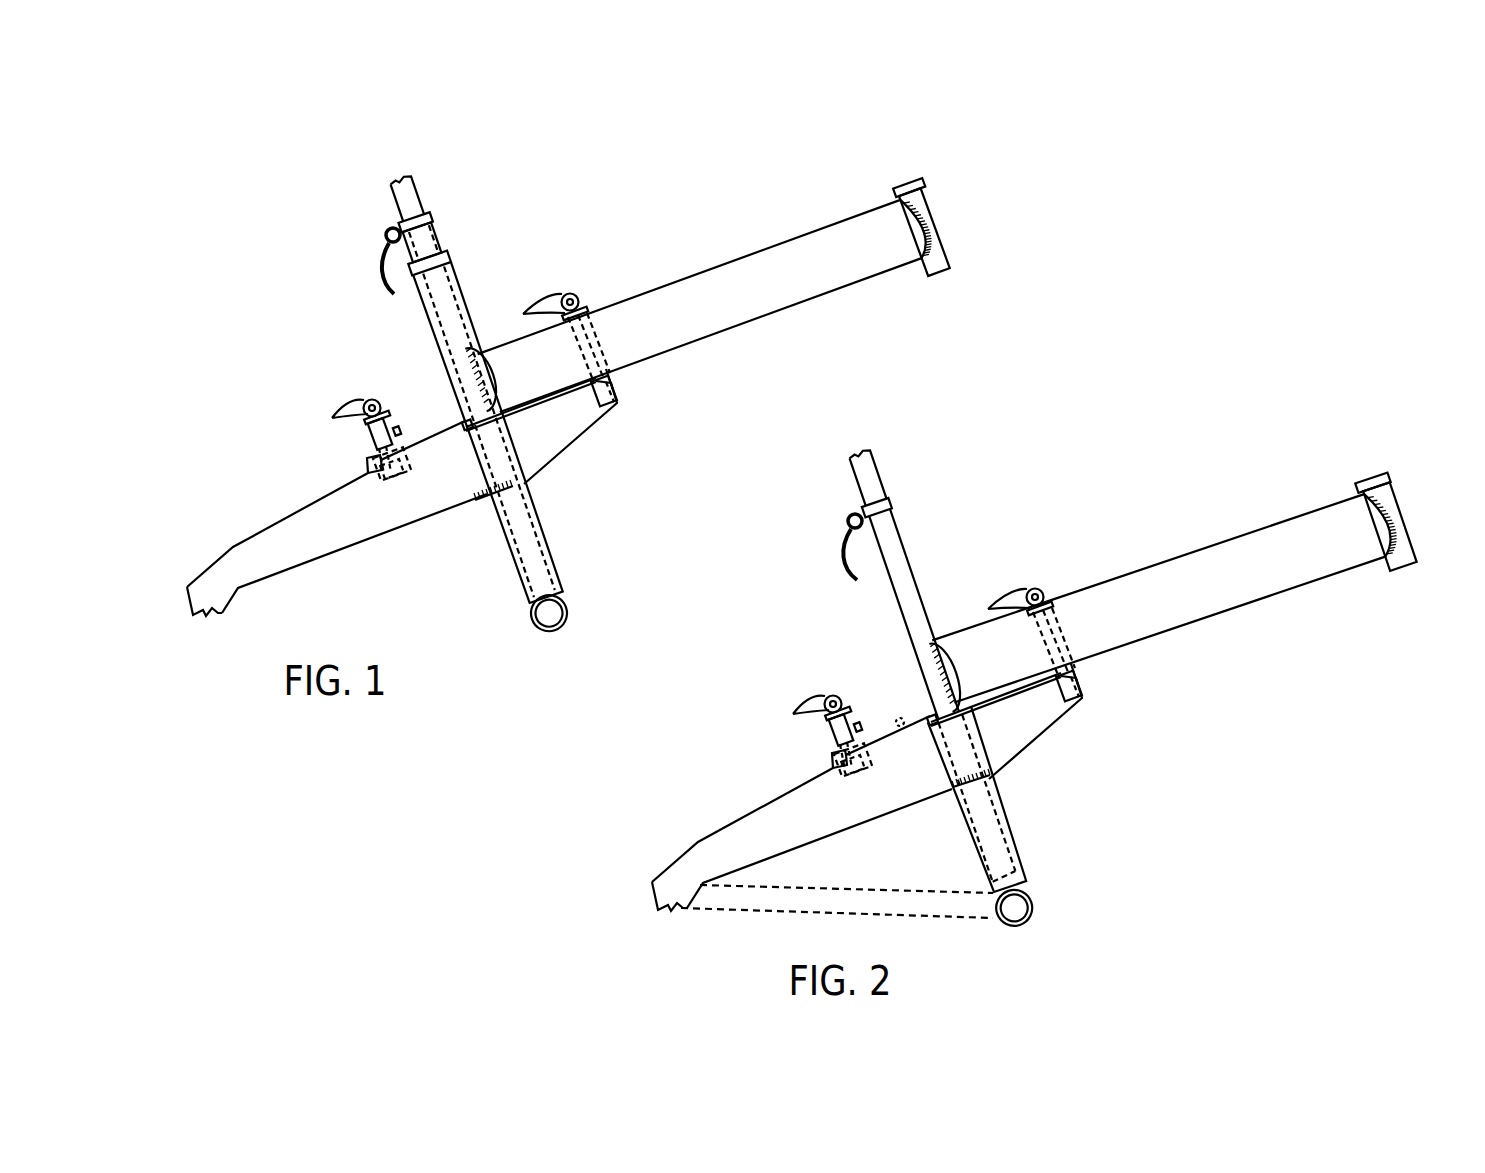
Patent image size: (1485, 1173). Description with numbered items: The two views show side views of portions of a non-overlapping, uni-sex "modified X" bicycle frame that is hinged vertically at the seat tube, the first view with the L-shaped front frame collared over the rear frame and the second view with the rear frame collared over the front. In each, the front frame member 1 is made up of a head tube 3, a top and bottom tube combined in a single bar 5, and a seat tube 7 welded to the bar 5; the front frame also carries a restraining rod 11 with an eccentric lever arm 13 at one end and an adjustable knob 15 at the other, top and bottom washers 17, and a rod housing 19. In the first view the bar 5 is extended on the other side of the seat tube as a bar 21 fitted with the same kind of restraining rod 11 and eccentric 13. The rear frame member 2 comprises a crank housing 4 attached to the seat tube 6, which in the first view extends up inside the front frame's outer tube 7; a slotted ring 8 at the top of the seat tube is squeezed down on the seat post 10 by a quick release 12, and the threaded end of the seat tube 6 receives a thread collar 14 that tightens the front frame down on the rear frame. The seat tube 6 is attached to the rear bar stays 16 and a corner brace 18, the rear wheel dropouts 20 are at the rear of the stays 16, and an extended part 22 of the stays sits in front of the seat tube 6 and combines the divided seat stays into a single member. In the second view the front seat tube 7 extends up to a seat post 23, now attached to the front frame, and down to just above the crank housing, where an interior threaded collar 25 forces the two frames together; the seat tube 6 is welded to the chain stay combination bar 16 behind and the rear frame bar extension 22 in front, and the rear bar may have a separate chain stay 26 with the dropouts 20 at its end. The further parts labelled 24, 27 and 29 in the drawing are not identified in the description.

In FIG. 1, the front frame member 1 is at (731, 295).
In FIG. 2, the front frame member 1 is at (1196, 588).
In FIG. 1, the rear frame member 2 is at (381, 524).
In FIG. 2, the rear frame member 2 is at (846, 812).
In FIG. 1, the head tube 3 is at (928, 218).
In FIG. 2, the head tube 3 is at (1406, 517).
In FIG. 1, the crank housing 4 is at (531, 611).
In FIG. 2, the crank housing 4 is at (1022, 909).
In FIG. 1, the bar 5 is at (674, 316).
In FIG. 2, the bar 5 is at (1145, 611).
In FIG. 1, the seat tube 6 is at (458, 273).
In FIG. 2, the seat tube 6 is at (965, 852).
In FIG. 1, the seat tube 7 is at (434, 343).
In FIG. 2, the seat tube 7 is at (898, 540).
In FIG. 1, the slotted ring 8 is at (408, 222).
In FIG. 1, the seat post 10 is at (413, 183).
In FIG. 1, the restraining rod 11 is at (369, 466).
In FIG. 2, the restraining rod 11 is at (842, 765).
In FIG. 1, the quick release 12 is at (380, 234).
In FIG. 1, the eccentric lever arm 13 is at (338, 415).
In FIG. 2, the eccentric lever arm 13 is at (798, 712).
In FIG. 1, the thread collar 14 is at (447, 236).
In FIG. 1, the adjustable knob 15 is at (408, 468).
In FIG. 2, the adjustable knob 15 is at (873, 762).
In FIG. 1, the rear bar stays 16 is at (416, 493).
In FIG. 2, the rear bar stays 16 is at (698, 866).
In FIG. 1, the washers 17 is at (358, 424).
In FIG. 2, the washers 17 is at (823, 720).
In FIG. 1, the corner brace 18 is at (498, 529).
In FIG. 1, the rod housing 19 is at (398, 431).
In FIG. 2, the rod housing 19 is at (862, 727).
In FIG. 1, the rear wheel dropouts 20 is at (204, 612).
In FIG. 2, the rear wheel dropouts 20 is at (668, 908).
In FIG. 1, the bar 21 is at (463, 351).
In FIG. 2, the bar 21 is at (923, 650).
In FIG. 1, the rear frame bar extension 22 is at (586, 397).
In FIG. 2, the rear frame bar extension 22 is at (1047, 693).
In FIG. 2, the seat post 23 is at (873, 480).
In FIG. 2, the pivot hole 24 is at (898, 717).
In FIG. 2, the interior threaded collar 25 is at (1027, 872).
In FIG. 2, the chain stay 26 is at (895, 895).
In FIG. 2, the upper collar 27 is at (897, 503).
In FIG. 2, the ring pin 29 is at (843, 518).